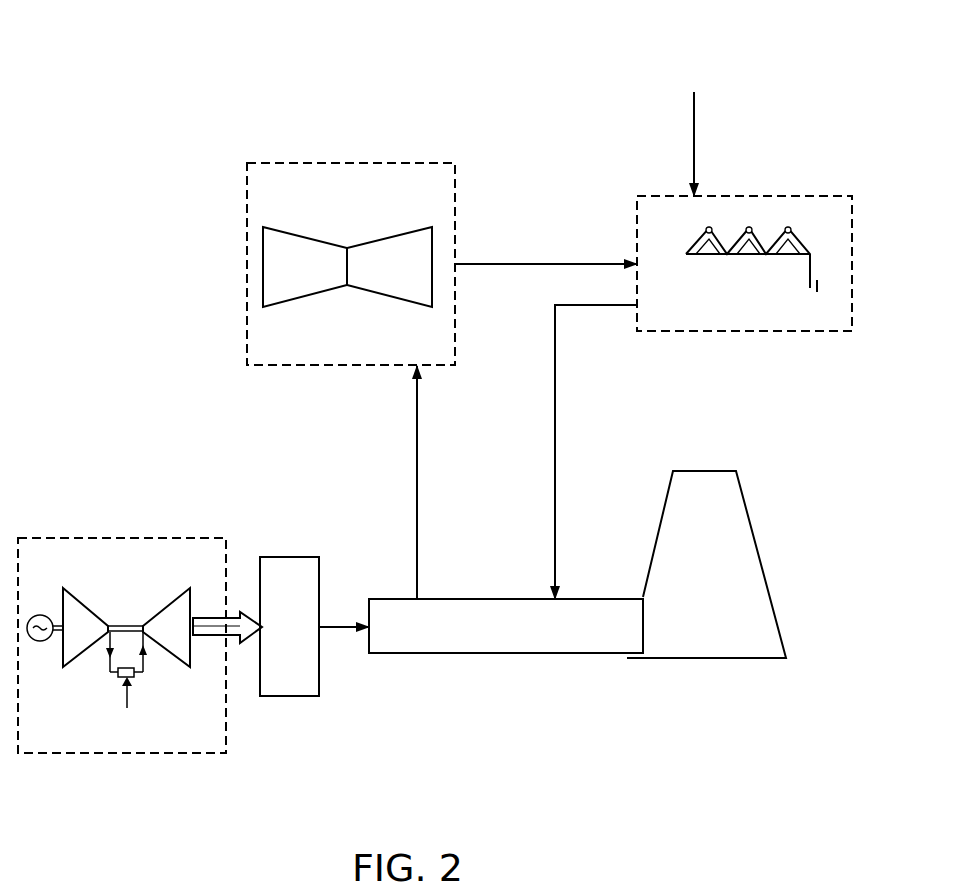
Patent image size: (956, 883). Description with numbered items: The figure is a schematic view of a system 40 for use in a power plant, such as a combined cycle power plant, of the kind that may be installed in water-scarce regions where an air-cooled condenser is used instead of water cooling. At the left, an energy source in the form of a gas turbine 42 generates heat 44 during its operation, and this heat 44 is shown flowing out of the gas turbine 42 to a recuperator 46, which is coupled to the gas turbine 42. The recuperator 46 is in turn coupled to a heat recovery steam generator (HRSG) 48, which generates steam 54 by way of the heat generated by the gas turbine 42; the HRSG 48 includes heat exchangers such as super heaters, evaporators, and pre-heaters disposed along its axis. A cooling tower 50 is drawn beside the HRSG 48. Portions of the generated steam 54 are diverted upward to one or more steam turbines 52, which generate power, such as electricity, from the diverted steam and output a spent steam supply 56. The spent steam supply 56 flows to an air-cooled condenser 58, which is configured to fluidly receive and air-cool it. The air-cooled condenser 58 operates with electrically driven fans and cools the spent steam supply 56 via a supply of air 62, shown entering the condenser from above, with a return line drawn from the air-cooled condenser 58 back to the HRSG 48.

The system 40 is at (168, 58).
The gas turbine 42 is at (118, 538).
The heat 44 is at (240, 614).
The recuperator 46 is at (287, 557).
The heat recovery steam generator (HRSG) 48 is at (483, 598).
The cooling tower 50 is at (763, 560).
The steam turbine 52 is at (349, 163).
The steam 54 is at (417, 452).
The spent steam supply 56 is at (544, 263).
The air-cooled condenser 58 is at (793, 195).
The supply of air 62 is at (694, 134).